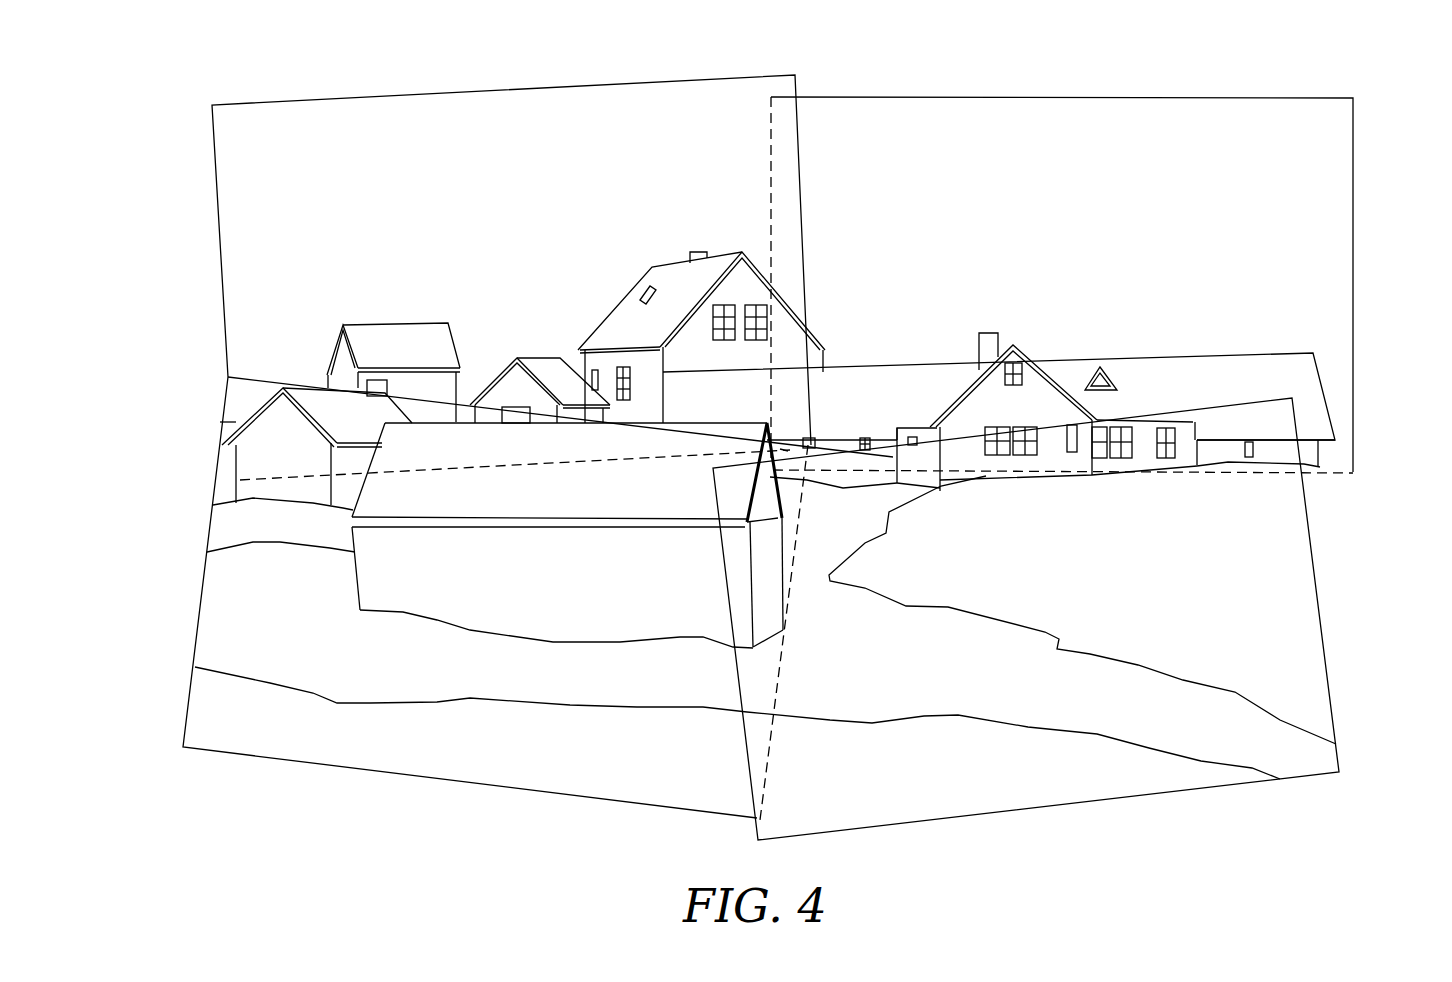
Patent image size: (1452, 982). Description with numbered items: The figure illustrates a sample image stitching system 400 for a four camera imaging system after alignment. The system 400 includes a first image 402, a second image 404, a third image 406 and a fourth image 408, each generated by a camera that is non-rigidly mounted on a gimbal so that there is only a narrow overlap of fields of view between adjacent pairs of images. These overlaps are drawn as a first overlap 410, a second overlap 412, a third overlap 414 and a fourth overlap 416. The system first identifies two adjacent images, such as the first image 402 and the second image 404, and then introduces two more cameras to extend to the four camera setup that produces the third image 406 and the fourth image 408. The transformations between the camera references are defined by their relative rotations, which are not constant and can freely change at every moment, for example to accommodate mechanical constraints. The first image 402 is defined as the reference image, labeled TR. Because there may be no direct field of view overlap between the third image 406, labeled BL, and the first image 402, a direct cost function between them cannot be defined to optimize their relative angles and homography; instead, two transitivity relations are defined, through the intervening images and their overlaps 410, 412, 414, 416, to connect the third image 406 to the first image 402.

The image stitching system 400 is at (131, 133).
The first image 402 is at (1298, 182).
The second image 404 is at (565, 125).
The third image 406 is at (278, 627).
The fourth image 408 is at (1282, 645).
The first overlap 410 is at (790, 405).
The second overlap 412 is at (283, 440).
The third overlap 414 is at (1273, 430).
The fourth overlap 416 is at (767, 540).